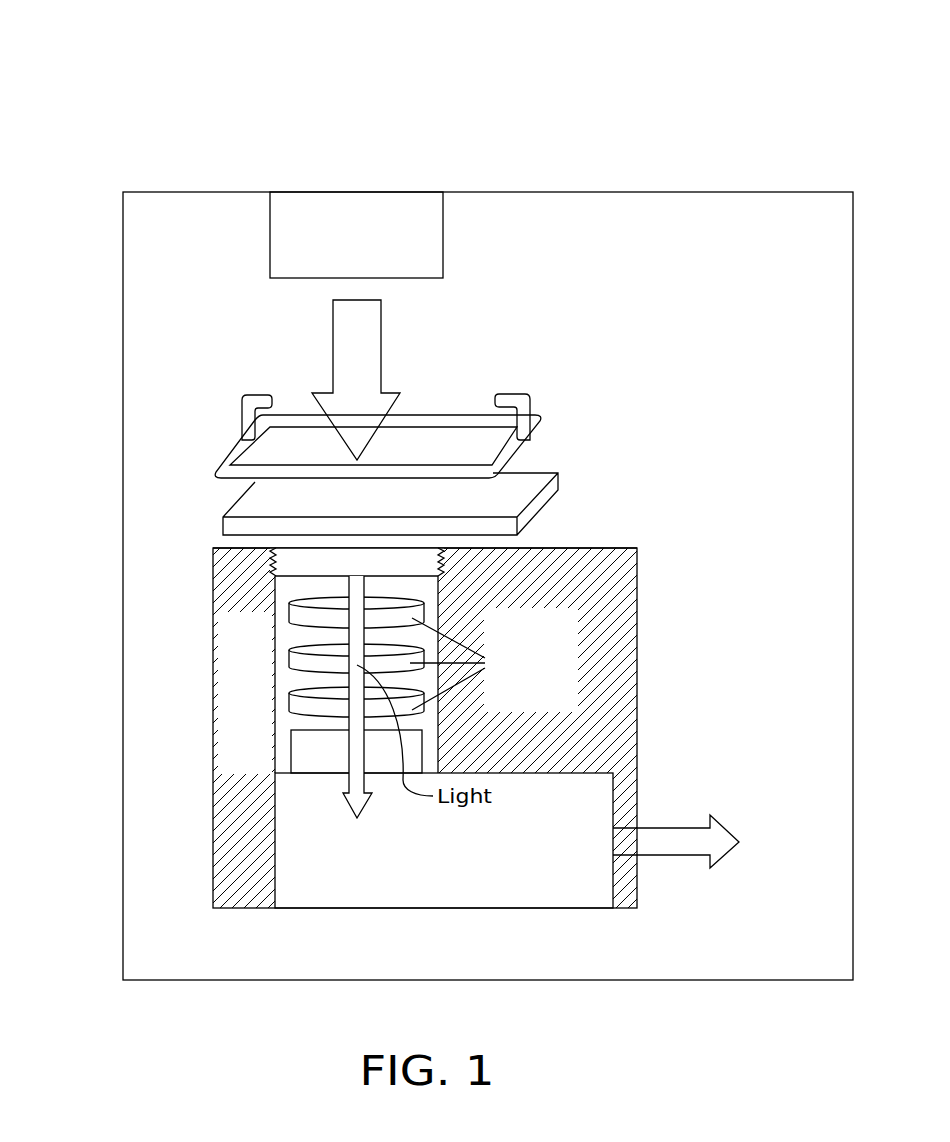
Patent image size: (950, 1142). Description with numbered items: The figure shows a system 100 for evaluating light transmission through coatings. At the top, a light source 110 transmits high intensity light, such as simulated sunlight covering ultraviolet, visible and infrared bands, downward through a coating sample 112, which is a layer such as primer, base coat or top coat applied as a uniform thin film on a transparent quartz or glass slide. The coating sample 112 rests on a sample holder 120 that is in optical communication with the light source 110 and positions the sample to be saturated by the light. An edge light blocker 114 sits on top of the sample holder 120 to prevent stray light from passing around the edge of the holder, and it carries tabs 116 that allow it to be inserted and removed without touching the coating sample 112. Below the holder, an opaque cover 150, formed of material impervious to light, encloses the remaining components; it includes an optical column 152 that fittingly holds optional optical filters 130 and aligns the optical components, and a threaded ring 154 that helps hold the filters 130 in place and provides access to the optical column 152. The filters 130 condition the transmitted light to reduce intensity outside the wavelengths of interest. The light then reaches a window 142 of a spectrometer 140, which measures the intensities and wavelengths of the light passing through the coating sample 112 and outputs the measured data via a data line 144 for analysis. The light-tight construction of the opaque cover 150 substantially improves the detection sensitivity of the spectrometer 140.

The system 100 is at (150, 120).
The light source 110 is at (362, 192).
The coating sample 112 is at (222, 522).
The edge light blocker 114 is at (222, 460).
The tabs 116 is at (245, 397).
The sample holder 120 is at (235, 543).
The optical filters 130 is at (573, 660).
The spectrometer 140 is at (275, 870).
The window 142 is at (298, 775).
The data line 144 is at (613, 845).
The opaque cover 150 is at (212, 717).
The optical column 152 is at (275, 590).
The threaded ring 154 is at (443, 559).